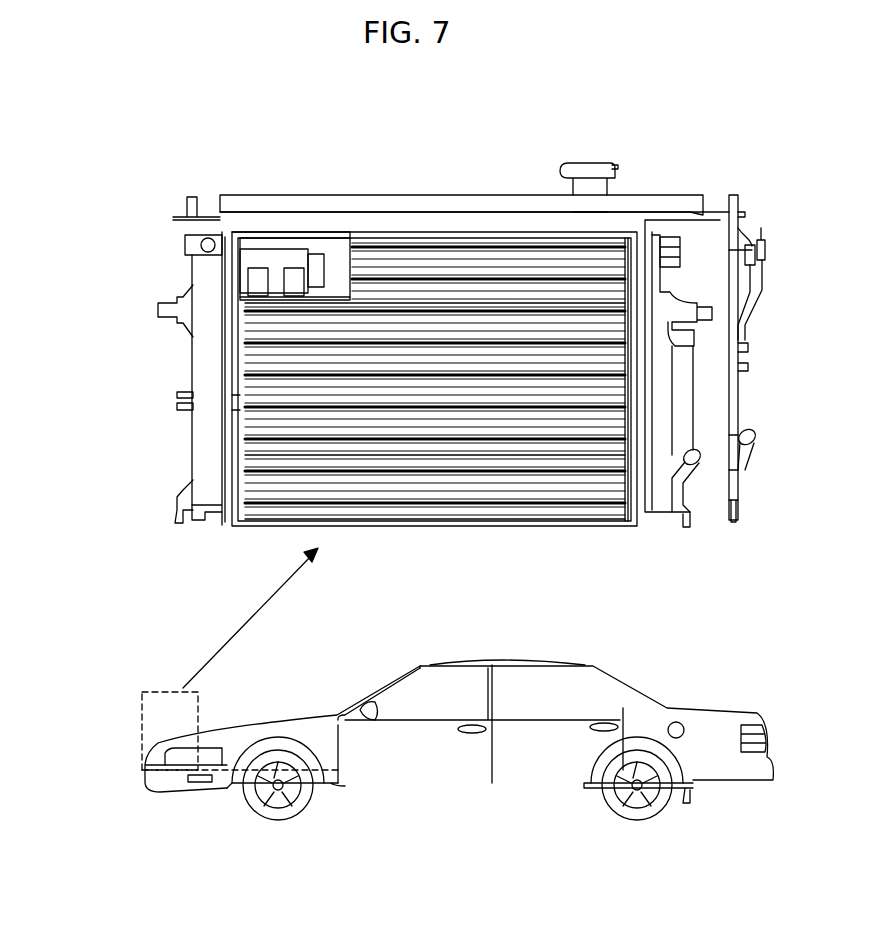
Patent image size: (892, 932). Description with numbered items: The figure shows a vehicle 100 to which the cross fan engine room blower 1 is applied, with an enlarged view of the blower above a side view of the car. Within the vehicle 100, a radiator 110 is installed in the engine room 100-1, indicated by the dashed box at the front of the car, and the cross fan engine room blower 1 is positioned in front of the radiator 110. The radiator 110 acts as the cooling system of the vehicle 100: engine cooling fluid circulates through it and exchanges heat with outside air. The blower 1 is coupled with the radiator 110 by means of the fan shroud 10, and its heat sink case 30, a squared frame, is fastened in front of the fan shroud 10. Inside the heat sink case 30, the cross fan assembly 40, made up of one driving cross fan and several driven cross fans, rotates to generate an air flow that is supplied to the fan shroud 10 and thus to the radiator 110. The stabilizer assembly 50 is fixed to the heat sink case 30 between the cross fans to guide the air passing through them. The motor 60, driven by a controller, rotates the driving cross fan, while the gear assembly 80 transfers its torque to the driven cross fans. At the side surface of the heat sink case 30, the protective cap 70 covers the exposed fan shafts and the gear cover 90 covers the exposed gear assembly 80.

The cross fan engine room blower 1 is at (82, 222).
The fan shroud 10 is at (208, 352).
The heat sink case 30 is at (300, 235).
The cross fan assembly 40 is at (303, 415).
The stabilizer assembly 50 is at (403, 305).
The motor 60 is at (270, 257).
The protective cap 70 is at (232, 402).
The gear assembly 80 is at (633, 468).
The gear cover 90 is at (640, 493).
The radiator 110 is at (660, 196).
The vehicle 100 is at (640, 700).
The engine room 100-1 is at (238, 735).